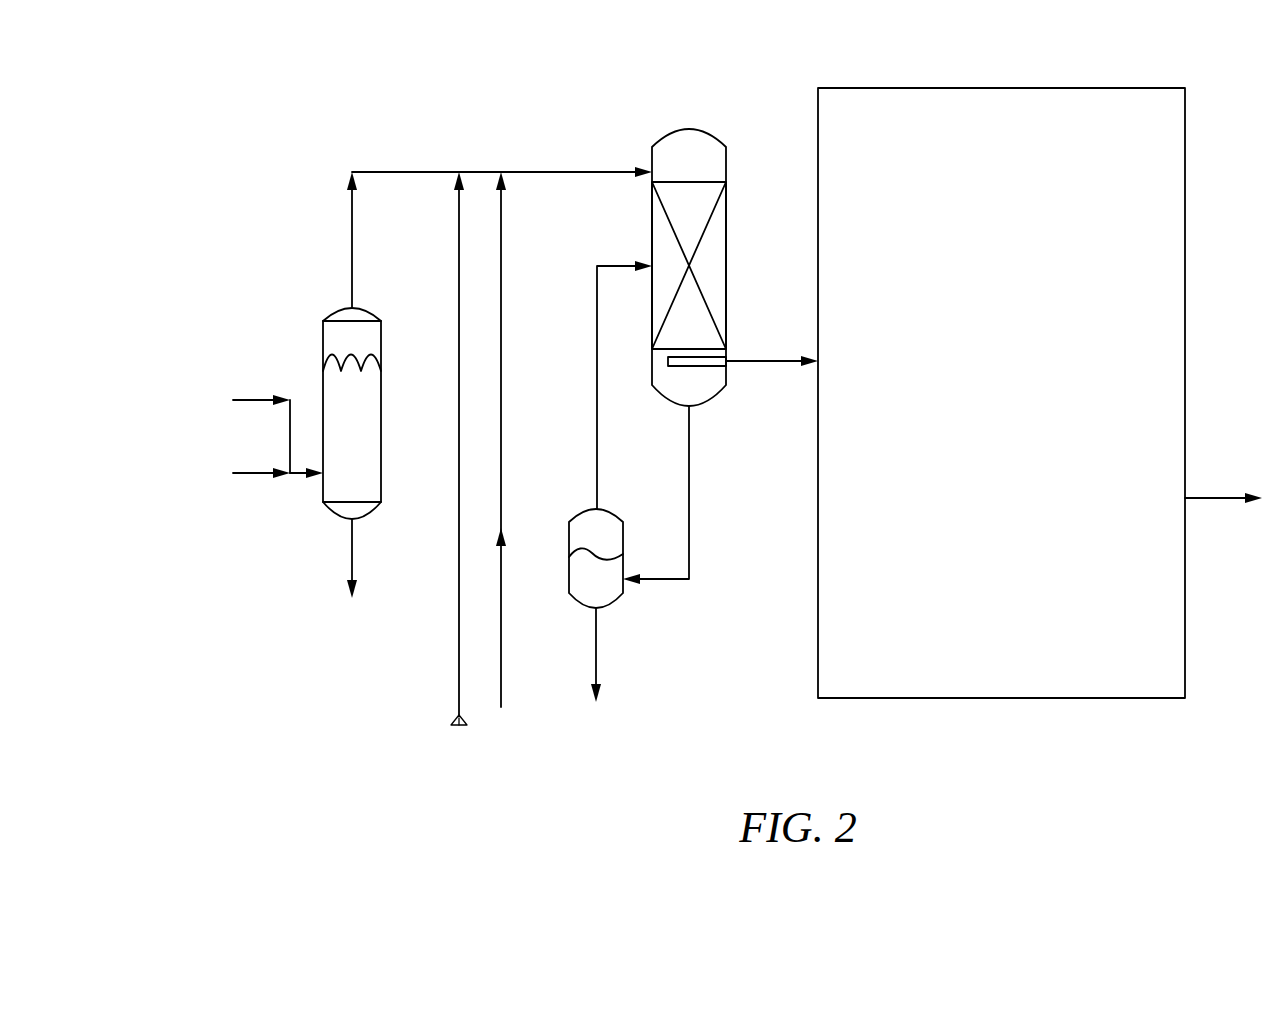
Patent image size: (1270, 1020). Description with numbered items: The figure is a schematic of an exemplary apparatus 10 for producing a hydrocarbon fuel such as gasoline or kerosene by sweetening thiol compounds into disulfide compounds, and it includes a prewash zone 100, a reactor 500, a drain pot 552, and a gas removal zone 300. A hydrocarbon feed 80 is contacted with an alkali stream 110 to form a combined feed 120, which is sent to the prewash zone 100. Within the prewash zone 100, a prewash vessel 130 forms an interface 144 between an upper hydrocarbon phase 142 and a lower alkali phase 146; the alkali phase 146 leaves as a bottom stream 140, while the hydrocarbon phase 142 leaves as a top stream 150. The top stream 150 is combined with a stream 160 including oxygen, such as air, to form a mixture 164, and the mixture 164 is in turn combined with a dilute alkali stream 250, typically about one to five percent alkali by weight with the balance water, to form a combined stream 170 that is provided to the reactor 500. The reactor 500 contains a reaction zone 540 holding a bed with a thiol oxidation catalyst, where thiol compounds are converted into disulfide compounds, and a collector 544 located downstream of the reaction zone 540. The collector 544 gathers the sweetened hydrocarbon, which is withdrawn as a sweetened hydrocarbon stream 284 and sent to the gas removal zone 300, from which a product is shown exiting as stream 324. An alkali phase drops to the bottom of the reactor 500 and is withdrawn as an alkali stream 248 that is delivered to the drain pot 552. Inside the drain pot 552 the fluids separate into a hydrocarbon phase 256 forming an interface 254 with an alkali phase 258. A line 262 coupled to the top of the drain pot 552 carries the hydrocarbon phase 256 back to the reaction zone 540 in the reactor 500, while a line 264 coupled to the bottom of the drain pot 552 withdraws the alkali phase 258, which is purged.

The apparatus 10 is at (276, 96).
The prewash zone 100 is at (198, 284).
The hydrocarbon feed 80 is at (251, 397).
The alkali stream 110 is at (251, 468).
The combined feed 120 is at (295, 480).
The prewash vessel 130 is at (381, 324).
The bottom stream 140 is at (353, 545).
The hydrocarbon phase 142 is at (336, 341).
The interface 144 is at (381, 361).
The alkali phase 146 is at (370, 420).
The top stream 150 is at (353, 240).
The stream including oxygen 160 is at (459, 654).
The mixture 164 is at (484, 170).
The combined stream 170 is at (531, 170).
The alkali stream 250 is at (502, 654).
The line 262 is at (612, 262).
The line 264 is at (598, 650).
The alkali stream 248 is at (677, 580).
The interface 254 is at (609, 560).
The hydrocarbon phase 256 is at (582, 541).
The alkali phase 258 is at (582, 587).
The drain pot 552 is at (609, 607).
The reactor 500 is at (686, 128).
The reaction zone 540 is at (718, 222).
The collector 544 is at (700, 366).
The sweetened hydrocarbon stream 284 is at (766, 358).
The gas removal zone 300 is at (1186, 650).
The product stream 324 is at (1219, 496).